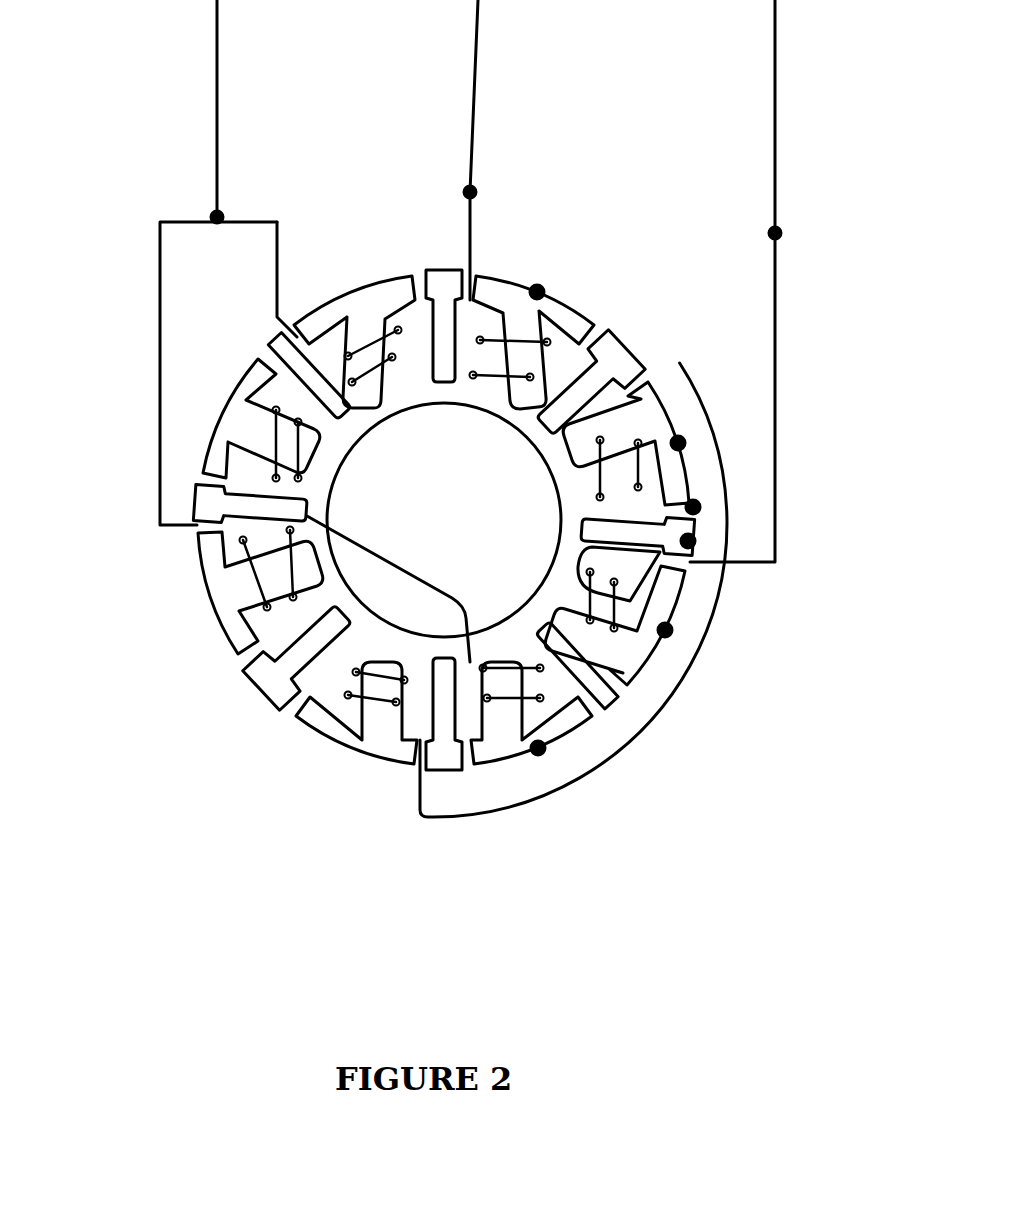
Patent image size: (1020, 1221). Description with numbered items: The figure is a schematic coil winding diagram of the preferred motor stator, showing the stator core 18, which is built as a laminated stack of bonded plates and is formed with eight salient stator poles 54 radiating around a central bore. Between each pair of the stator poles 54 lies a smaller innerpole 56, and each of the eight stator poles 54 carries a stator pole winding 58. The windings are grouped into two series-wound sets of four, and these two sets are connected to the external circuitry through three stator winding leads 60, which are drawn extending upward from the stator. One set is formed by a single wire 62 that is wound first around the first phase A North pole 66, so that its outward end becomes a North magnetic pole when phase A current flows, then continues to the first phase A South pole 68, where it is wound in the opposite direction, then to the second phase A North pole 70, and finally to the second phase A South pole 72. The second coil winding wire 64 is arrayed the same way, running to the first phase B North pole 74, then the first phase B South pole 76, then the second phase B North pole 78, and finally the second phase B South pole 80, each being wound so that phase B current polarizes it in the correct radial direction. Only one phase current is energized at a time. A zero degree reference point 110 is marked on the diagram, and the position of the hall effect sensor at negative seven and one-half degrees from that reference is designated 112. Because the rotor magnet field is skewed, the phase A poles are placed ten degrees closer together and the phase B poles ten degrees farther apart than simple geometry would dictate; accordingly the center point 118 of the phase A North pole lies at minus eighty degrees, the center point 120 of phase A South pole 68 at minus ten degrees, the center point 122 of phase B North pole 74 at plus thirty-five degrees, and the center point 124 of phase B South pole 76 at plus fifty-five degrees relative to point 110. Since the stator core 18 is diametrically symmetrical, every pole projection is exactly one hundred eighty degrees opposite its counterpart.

The stator core 18 is at (330, 460).
The stator poles 54 is at (440, 553).
The innerpole 56 is at (445, 290).
The stator pole winding 58 is at (368, 710).
The stator winding leads 60 is at (217, 97).
The single wire 62 is at (160, 290).
The second coil winding wire 64 is at (277, 265).
The first phase A North pole 66 is at (533, 342).
The first phase A South pole 68 is at (626, 443).
The second phase A North pole 70 is at (356, 713).
The second phase A South pole 72 is at (260, 593).
The first phase B North pole 74 is at (615, 625).
The first phase B South pole 76 is at (531, 713).
The second phase B North pole 78 is at (261, 418).
The second phase B South pole 80 is at (354, 342).
The zero degree reference point 110 is at (693, 507).
The hall effect sensor position 112 is at (688, 541).
The center point of phase A North pole 118 is at (537, 292).
The center point of phase A South pole 120 is at (678, 443).
The center point of phase B North pole 122 is at (665, 630).
The center point of phase B South pole 124 is at (538, 748).